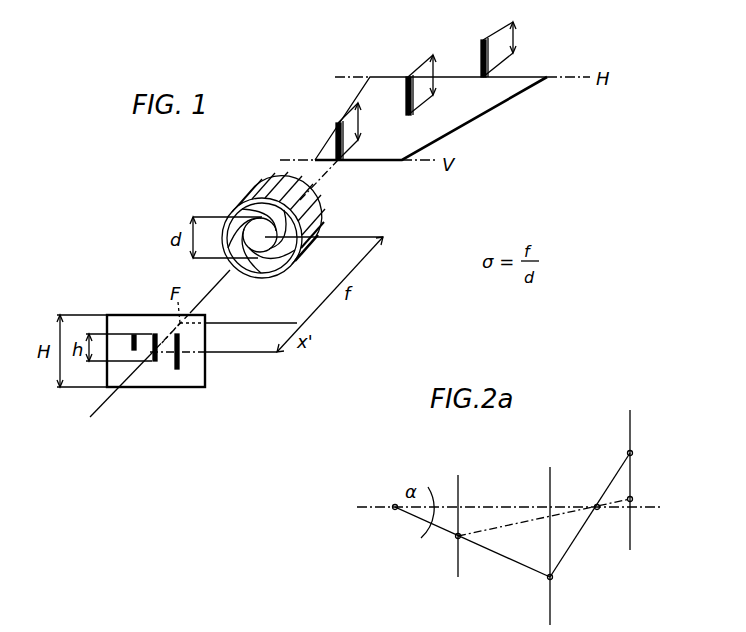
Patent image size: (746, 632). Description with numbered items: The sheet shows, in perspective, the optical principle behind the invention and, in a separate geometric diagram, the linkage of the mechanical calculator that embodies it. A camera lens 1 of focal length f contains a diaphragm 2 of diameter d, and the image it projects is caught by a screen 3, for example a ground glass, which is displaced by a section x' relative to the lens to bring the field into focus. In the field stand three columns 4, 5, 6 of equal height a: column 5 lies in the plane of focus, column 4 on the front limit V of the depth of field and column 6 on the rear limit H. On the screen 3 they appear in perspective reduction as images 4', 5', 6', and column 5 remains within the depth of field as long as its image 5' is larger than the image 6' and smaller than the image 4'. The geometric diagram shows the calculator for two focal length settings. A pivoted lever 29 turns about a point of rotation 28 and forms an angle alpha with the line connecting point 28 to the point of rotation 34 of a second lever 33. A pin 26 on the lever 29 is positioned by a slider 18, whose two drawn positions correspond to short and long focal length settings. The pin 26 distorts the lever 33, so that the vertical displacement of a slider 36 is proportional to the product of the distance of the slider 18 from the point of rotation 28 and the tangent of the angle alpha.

In FIG. 1, the camera lens 1 is at (250, 200).
In FIG. 1, the diaphragm 2 is at (266, 206).
In FIG. 1, the screen 3 is at (117, 316).
In FIG. 1, the column 4 is at (337, 131).
In FIG. 1, the column 5 is at (417, 82).
In FIG. 1, the column 6 is at (492, 49).
In FIG. 1, the image of column 4 4' is at (210, 362).
In FIG. 1, the image of column 5 5' is at (176, 375).
In FIG. 1, the image of column 6 6' is at (146, 376).
In FIG. 2a, the slider 18 is at (467, 452).
In FIG. 2a, the pin 26 is at (455, 539).
In FIG. 2a, the point of rotation 28 is at (379, 496).
In FIG. 2a, the pivoted lever 29 is at (493, 553).
In FIG. 2a, the lever 33 is at (510, 523).
In FIG. 2a, the point of rotation 34 is at (596, 506).
In FIG. 2a, the slider 36 is at (630, 465).